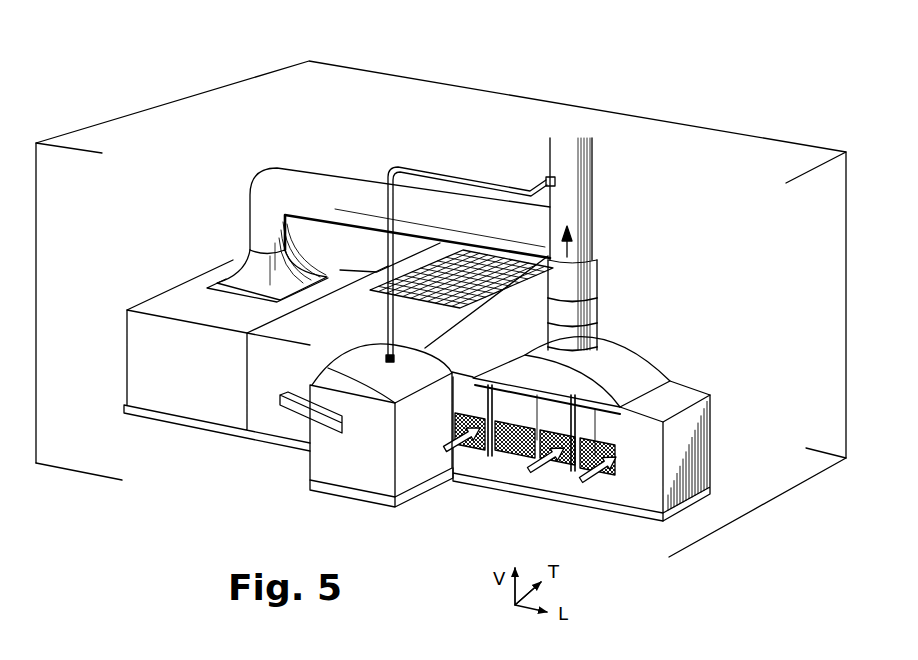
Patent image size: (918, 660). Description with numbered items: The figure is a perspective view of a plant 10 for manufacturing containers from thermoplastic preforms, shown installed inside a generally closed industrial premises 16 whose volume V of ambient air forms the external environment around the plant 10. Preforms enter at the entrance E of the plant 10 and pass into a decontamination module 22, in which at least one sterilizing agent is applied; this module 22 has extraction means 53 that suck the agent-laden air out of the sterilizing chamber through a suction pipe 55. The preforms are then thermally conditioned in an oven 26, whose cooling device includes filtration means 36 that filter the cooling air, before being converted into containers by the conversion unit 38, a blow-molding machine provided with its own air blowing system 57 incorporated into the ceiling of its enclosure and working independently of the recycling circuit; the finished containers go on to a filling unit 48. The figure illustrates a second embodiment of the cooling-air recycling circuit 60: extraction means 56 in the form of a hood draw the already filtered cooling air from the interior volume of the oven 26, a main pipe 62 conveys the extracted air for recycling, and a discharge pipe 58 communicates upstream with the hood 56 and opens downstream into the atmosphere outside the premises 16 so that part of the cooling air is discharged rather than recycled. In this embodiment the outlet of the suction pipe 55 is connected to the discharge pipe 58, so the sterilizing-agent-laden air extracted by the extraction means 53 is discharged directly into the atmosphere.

The plant 10 is at (742, 302).
The industrial premises 16 is at (783, 143).
The decontamination module 22 is at (371, 457).
The oven 26 is at (613, 489).
The filtration means 36 is at (560, 467).
The conversion unit 38 is at (269, 412).
The filling unit 48 is at (245, 282).
The extraction means 53 is at (343, 386).
The suction pipe 55 is at (481, 183).
The extraction means (hood) 56 is at (628, 368).
The air blowing system 57 is at (477, 278).
The discharge pipe 58 is at (574, 207).
The cooling-air recycling circuit 60 is at (633, 312).
The main pipe 62 is at (318, 186).
The entrance E is at (338, 428).
The volume of ambient air V is at (232, 126).